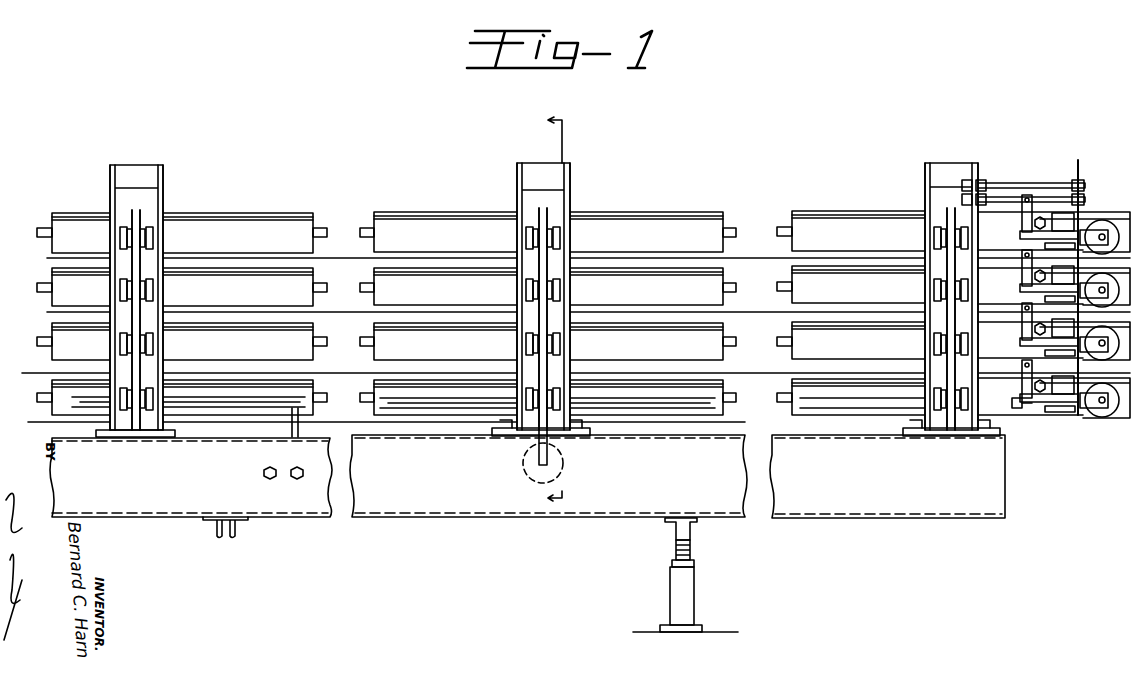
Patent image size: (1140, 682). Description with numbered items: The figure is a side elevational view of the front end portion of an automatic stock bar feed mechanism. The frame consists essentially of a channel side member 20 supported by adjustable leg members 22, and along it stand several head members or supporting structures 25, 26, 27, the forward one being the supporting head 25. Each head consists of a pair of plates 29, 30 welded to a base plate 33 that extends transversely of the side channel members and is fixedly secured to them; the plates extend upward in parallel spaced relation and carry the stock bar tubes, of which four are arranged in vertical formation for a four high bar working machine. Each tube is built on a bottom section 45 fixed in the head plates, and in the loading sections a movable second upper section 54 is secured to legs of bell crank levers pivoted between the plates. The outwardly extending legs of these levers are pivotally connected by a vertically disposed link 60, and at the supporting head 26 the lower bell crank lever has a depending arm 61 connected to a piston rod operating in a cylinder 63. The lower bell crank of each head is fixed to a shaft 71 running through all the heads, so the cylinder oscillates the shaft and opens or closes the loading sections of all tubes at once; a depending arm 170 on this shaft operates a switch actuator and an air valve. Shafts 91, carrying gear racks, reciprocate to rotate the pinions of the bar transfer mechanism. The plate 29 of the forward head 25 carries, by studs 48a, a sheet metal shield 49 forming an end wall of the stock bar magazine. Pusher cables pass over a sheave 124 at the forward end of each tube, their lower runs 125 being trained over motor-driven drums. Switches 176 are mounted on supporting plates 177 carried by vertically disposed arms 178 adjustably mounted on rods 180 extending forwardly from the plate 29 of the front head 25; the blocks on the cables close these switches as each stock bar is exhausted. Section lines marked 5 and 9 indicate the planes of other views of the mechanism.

The section line 5- 5 is at (115, 165).
The section line 9- 9 is at (253, 366).
The channel side member 20 is at (527, 486).
The adjustable leg member 22 is at (692, 580).
The supporting head 25 is at (963, 158).
The supporting head 26 is at (534, 150).
The supporting head 27 is at (156, 161).
The plate 29 is at (163, 185).
The plate 30 is at (110, 180).
The base plate 33 is at (112, 436).
The bottom section 45 is at (854, 313).
The stud 48a is at (1042, 184).
The sheet metal shield 49 is at (1080, 168).
The second upper section 54 is at (306, 318).
The link 60 is at (136, 262).
The depending arm 61 is at (530, 440).
The cylinder 63 is at (563, 463).
The shaft 71 is at (320, 402).
The shaft 91 is at (324, 224).
The sheave 124 is at (1108, 255).
The lower run 125 is at (312, 259).
The depending arm 170 is at (300, 428).
The switch 176 is at (1081, 210).
The supporting plate 177 is at (1040, 415).
The arm 178 is at (1022, 396).
The rod 180 is at (1010, 333).